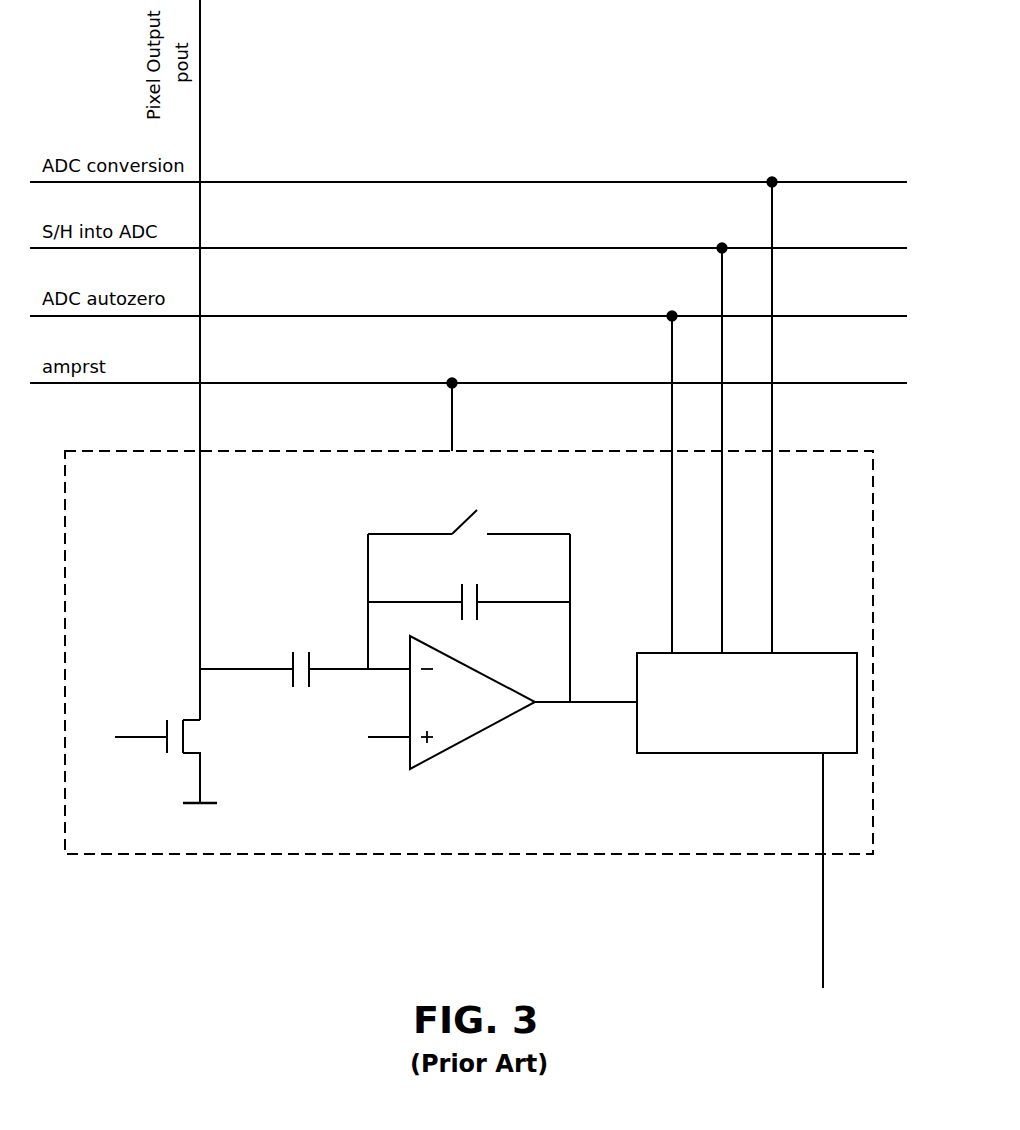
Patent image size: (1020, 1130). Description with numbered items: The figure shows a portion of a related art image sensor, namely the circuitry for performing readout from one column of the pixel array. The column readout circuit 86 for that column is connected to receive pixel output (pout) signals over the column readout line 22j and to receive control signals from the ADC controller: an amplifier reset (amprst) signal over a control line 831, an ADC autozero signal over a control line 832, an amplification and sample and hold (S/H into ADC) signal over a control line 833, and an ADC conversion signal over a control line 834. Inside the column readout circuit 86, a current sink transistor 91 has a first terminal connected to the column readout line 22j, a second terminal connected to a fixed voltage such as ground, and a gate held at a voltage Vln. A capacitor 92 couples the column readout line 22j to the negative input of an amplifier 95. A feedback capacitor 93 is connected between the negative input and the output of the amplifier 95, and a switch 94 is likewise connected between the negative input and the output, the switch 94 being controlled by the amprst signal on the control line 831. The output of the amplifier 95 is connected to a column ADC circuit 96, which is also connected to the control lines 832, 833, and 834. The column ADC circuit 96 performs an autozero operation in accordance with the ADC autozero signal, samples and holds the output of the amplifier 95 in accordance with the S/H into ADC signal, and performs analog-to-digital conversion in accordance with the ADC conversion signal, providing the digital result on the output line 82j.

The column readout line 22j is at (200, 32).
The control line 834 is at (822, 182).
The control line 833 is at (822, 248).
The control line 832 is at (822, 316).
The control line 831 is at (822, 383).
The column readout circuit 86 is at (123, 496).
The current sink transistor 91 is at (190, 750).
The capacitor 92 is at (292, 661).
The feedback capacitor 93 is at (480, 610).
The switch 94 is at (471, 533).
The amplifier 95 is at (468, 738).
The column ADC circuit 96 is at (736, 727).
The output line 82j is at (823, 920).